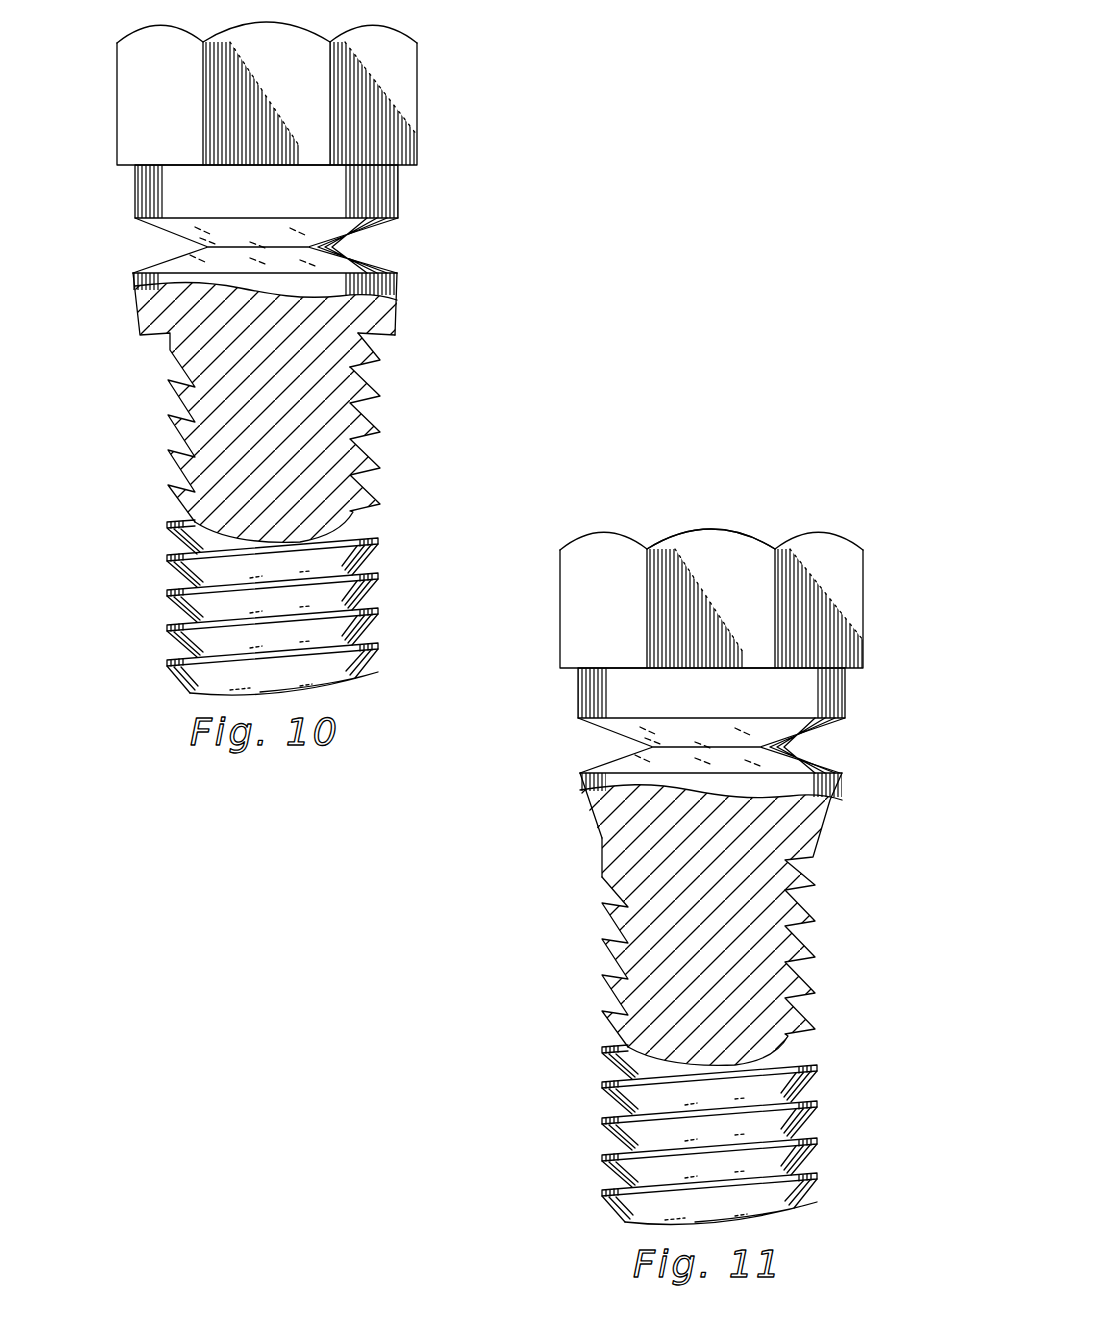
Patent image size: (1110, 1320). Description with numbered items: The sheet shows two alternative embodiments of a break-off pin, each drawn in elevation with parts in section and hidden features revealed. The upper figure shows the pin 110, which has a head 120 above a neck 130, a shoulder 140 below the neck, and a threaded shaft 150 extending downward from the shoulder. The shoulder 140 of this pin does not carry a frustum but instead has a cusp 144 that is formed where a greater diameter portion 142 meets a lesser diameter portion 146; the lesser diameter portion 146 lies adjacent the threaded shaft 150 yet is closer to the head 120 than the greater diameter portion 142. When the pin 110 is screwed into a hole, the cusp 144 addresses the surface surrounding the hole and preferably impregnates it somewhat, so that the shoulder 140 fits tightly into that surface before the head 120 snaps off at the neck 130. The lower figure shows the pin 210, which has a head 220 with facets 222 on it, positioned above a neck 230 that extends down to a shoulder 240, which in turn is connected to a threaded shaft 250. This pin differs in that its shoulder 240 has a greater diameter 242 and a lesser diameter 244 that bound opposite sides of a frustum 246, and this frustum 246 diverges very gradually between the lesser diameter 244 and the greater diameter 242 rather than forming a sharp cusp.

In FIG. 10, the pin 110 is at (466, 181).
In FIG. 10, the head 120 is at (418, 83).
In FIG. 10, the neck 130 is at (128, 247).
In FIG. 10, the shoulder 140 is at (428, 286).
In FIG. 10, the greater diameter portion 142 is at (398, 345).
In FIG. 10, the cusp 144 is at (368, 338).
In FIG. 10, the lesser diameter portion 146 is at (372, 348).
In FIG. 10, the threaded shaft 150 is at (135, 573).
In FIG. 11, the pin 210 is at (555, 952).
In FIG. 11, the head 220 is at (610, 532).
In FIG. 11, the facets 222 is at (758, 585).
In FIG. 11, the neck 230 is at (828, 753).
In FIG. 11, the shoulder 240 is at (848, 825).
In FIG. 11, the greater diameter 242 is at (578, 775).
In FIG. 11, the lesser diameter 244 is at (600, 862).
In FIG. 11, the frustum 246 is at (592, 818).
In FIG. 11, the threaded shaft 250 is at (557, 1108).